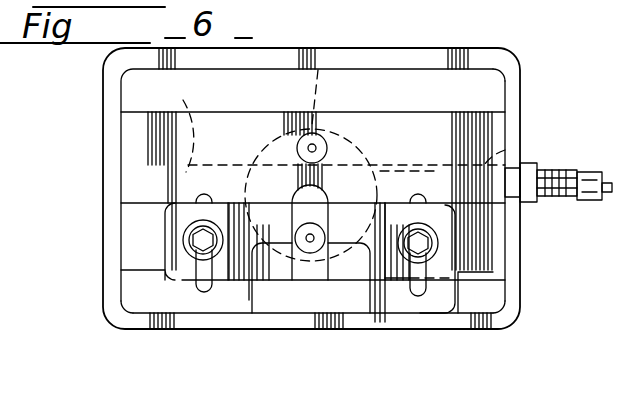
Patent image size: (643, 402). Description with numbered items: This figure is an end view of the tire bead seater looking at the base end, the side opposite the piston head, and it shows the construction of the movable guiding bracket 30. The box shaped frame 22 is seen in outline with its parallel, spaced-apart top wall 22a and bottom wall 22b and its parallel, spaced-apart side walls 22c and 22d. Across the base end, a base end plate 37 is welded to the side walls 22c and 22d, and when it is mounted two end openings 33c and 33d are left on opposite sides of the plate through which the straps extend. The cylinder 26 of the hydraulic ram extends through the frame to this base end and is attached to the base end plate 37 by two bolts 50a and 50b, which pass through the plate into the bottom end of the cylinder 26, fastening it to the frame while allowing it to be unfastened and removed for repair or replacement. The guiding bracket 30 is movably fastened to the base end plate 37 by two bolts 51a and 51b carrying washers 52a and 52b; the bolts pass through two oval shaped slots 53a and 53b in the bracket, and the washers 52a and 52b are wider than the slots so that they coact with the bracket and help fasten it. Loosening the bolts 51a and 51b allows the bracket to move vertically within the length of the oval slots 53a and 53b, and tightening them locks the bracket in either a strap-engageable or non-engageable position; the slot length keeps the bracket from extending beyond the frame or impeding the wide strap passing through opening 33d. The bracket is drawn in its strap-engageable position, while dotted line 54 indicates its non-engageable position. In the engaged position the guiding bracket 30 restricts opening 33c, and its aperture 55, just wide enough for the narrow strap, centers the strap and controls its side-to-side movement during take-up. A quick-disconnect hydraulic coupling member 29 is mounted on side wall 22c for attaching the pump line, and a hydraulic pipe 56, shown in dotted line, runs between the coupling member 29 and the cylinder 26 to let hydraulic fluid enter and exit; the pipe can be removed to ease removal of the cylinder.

The box shaped frame 22 is at (118, 326).
The top wall 22a is at (261, 60).
The bottom wall 22b is at (377, 327).
The side wall 22c is at (108, 142).
The side wall 22d is at (507, 297).
The cylinder 26 is at (318, 70).
The quick-disconnect hydraulic coupling member 29 is at (588, 175).
The movable guiding bracket 30 is at (425, 315).
The end opening 33c is at (470, 90).
The end opening 33d is at (130, 290).
The base end plate 37 is at (487, 133).
The bolt 50a is at (298, 267).
The bolt 50b is at (317, 140).
The bolt 51a is at (440, 247).
The bolt 51b is at (185, 244).
The washer 52a is at (447, 220).
The washer 52b is at (168, 211).
The oval shaped slot 53a is at (488, 327).
The oval shaped slot 53b is at (206, 312).
The dotted line 54 is at (190, 116).
The aperture 55 is at (340, 298).
The hydraulic pipe 56 is at (505, 150).